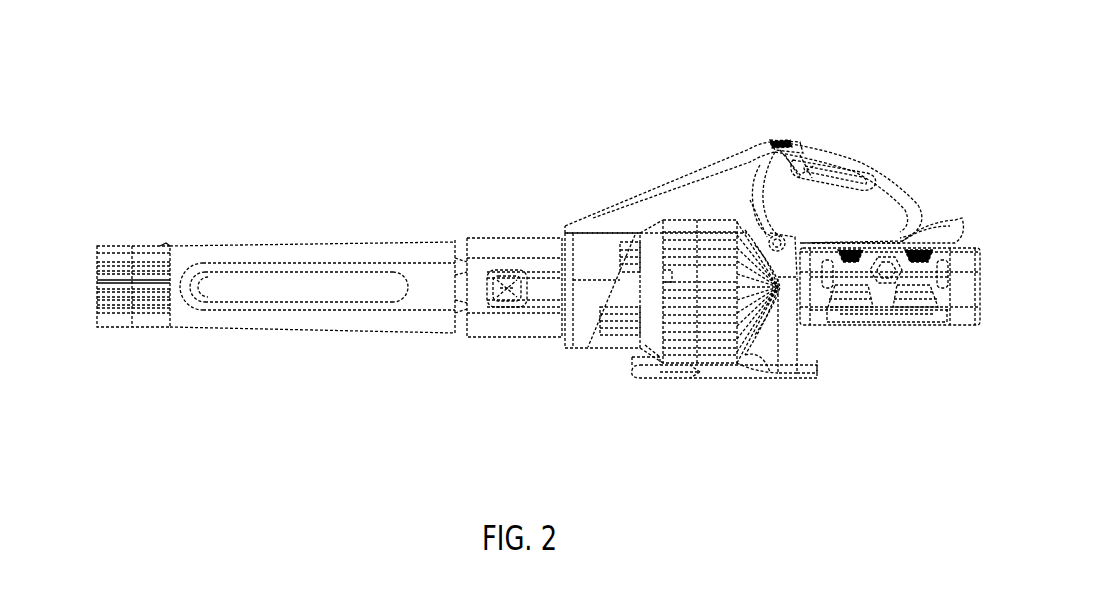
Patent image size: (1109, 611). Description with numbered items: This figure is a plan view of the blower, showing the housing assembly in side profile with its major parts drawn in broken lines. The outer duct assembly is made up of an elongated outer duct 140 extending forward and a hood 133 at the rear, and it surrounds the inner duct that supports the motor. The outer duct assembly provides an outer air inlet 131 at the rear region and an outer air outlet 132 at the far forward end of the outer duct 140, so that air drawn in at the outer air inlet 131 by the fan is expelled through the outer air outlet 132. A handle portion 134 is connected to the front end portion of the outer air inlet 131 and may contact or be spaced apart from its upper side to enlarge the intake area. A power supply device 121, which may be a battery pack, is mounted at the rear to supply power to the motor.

The power supply device 121 is at (833, 322).
The outer air inlet 131 is at (800, 340).
The outer air outlet 132 is at (92, 314).
The hood 133 is at (633, 373).
The handle portion 134 is at (875, 183).
The outer duct 140 is at (291, 308).